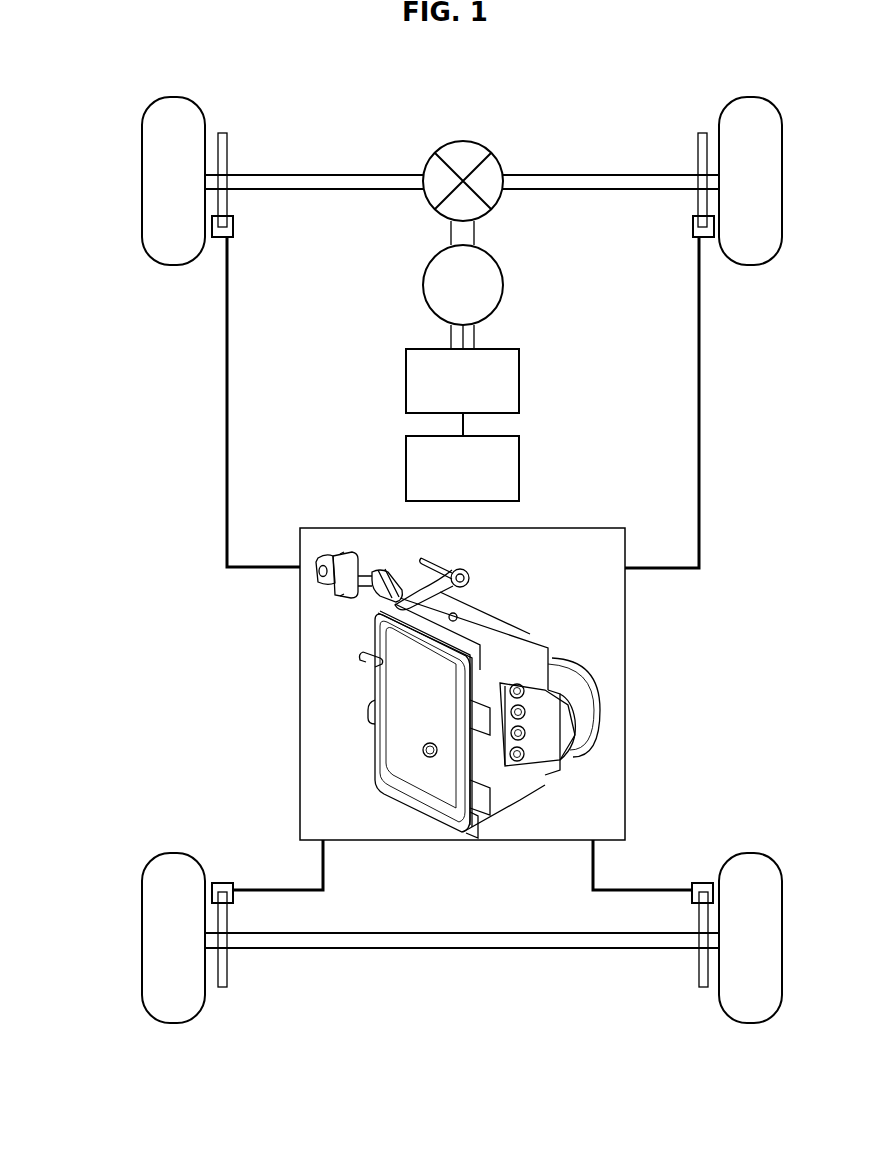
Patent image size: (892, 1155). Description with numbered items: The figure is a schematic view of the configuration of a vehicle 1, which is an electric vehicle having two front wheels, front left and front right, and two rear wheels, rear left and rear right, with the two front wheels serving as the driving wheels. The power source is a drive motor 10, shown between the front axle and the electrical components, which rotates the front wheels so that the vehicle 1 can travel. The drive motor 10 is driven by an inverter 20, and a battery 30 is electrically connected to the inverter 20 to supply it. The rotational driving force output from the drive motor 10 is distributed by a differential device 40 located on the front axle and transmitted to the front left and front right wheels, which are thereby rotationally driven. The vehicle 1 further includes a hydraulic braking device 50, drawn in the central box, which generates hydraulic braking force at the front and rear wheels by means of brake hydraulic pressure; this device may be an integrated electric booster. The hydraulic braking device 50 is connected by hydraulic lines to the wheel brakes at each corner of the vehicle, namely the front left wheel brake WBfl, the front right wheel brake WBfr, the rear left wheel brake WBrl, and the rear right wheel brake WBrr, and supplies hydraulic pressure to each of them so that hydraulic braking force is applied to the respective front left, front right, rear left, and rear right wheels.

The vehicle 1 is at (158, 489).
The drive motor 10 is at (505, 284).
The inverter 20 is at (519, 381).
The battery 30 is at (519, 468).
The differential device 40 is at (485, 146).
The hydraulic braking device 50 is at (625, 653).
The front left wheel brake WBfl is at (228, 145).
The front right wheel brake WBfr is at (698, 145).
The rear left wheel brake WBrl is at (225, 987).
The rear right wheel brake WBrr is at (703, 987).